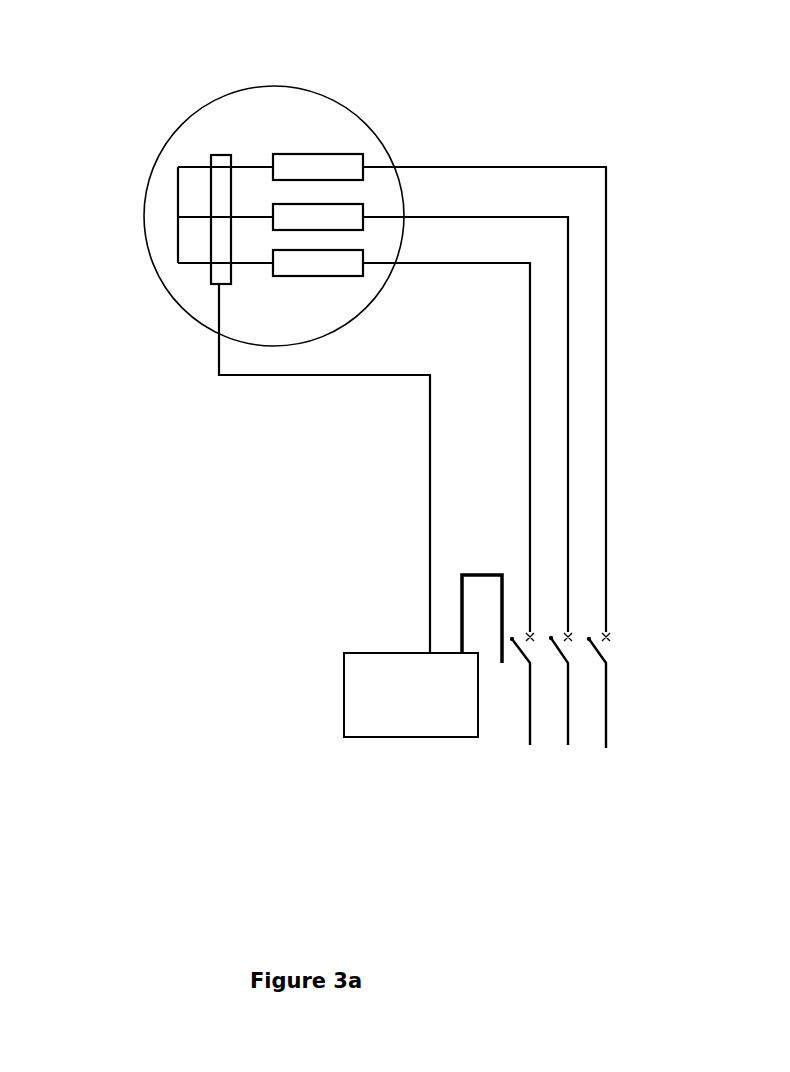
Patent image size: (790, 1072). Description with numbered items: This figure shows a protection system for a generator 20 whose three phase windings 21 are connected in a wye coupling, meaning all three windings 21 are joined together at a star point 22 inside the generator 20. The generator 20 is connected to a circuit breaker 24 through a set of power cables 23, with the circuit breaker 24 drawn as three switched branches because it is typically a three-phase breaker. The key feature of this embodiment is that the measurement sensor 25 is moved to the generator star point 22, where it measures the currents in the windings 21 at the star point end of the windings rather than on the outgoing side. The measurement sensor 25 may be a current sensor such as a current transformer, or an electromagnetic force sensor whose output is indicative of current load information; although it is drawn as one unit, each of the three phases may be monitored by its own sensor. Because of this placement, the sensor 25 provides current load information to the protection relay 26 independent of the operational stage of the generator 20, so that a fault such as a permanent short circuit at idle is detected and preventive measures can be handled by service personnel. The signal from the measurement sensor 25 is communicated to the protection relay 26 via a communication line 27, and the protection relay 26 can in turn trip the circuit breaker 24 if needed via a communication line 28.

The generator 20 is at (205, 110).
The phase windings 21 is at (347, 152).
The star point 22 is at (177, 205).
The power cables 23 is at (602, 277).
The circuit breaker 24 is at (603, 656).
The measurement sensor 25 is at (230, 153).
The protection relay 26 is at (411, 695).
The communication line 27 is at (310, 370).
The communication line 28 is at (463, 573).